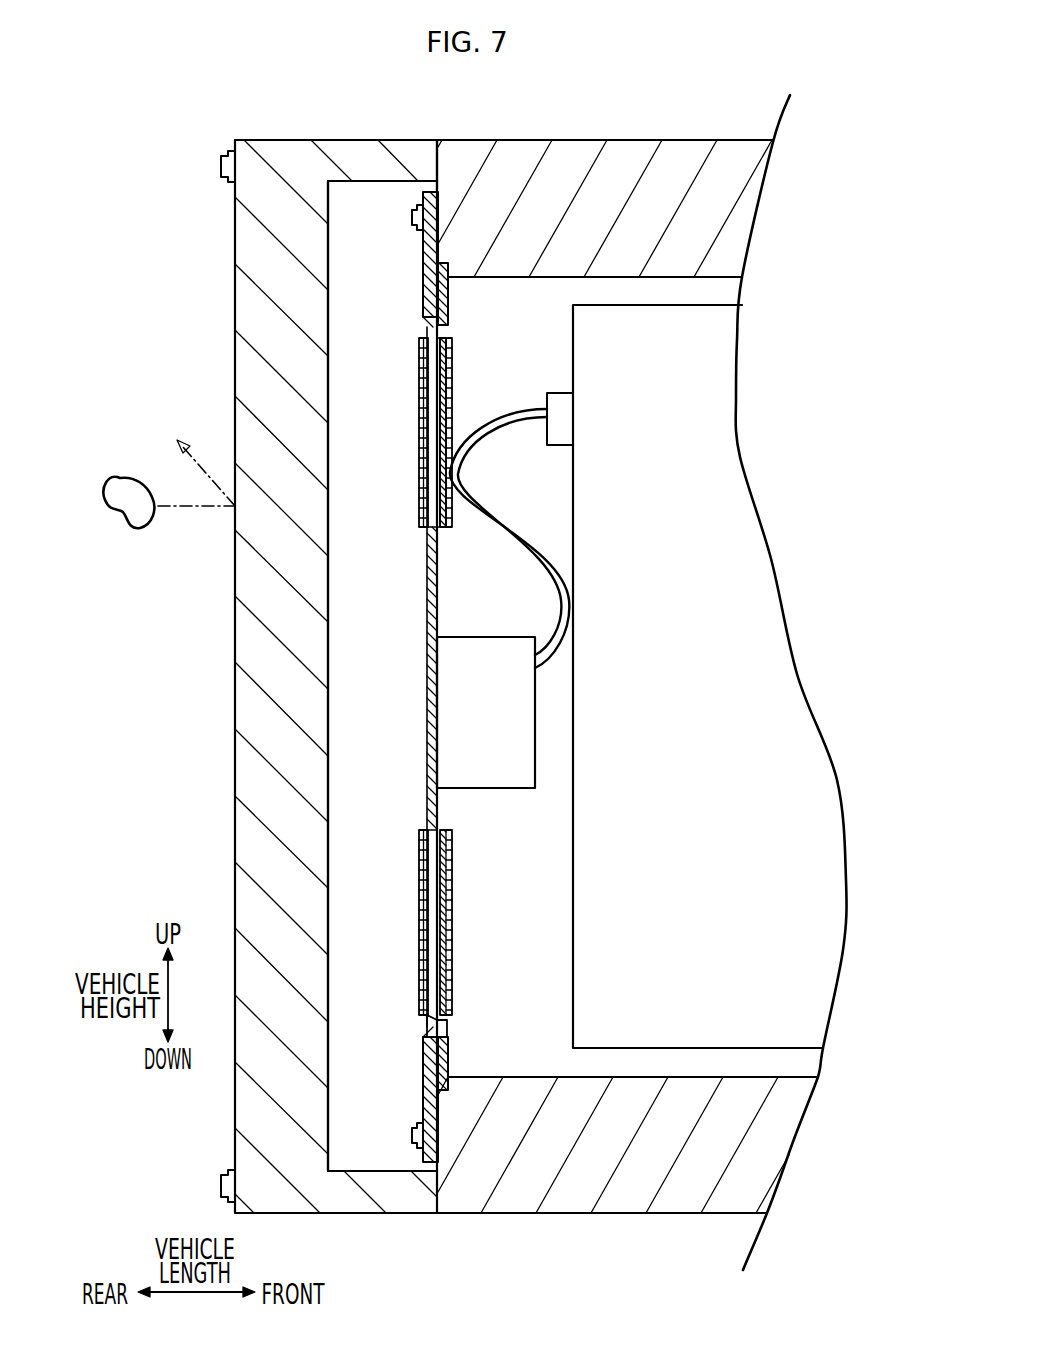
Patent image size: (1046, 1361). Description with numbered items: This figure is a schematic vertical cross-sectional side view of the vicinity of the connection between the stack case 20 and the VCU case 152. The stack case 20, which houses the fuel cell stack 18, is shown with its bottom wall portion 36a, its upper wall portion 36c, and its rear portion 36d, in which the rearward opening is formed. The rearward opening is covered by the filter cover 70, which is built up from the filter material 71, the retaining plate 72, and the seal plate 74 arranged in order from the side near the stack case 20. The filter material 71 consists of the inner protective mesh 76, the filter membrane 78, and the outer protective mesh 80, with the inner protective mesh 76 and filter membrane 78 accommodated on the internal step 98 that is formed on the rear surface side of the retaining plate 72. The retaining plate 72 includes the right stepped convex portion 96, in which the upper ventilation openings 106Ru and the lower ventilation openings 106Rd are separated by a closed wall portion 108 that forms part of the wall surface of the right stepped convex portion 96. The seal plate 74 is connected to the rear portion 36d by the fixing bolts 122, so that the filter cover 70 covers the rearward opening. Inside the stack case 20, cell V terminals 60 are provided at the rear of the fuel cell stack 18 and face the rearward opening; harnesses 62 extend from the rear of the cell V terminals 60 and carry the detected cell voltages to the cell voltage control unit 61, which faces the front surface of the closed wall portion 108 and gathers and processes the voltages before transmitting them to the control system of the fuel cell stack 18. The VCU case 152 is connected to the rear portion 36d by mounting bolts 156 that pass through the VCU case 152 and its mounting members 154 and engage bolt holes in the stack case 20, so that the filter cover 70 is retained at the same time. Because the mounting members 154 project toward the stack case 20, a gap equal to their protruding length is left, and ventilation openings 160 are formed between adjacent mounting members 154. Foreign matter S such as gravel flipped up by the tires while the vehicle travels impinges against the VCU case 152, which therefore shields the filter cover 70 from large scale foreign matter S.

The mounting member 154 is at (365, 160).
The VCU case 152 is at (250, 698).
The ventilation opening 160 is at (355, 760).
The rear portion 36d is at (437, 166).
The upper wall portion 36c is at (625, 157).
The bottom wall portion 36a is at (625, 1197).
The stack case 20 is at (540, 1214).
The fuel cell stack 18 is at (702, 405).
The mounting bolt 156 is at (221, 166).
The fixing bolt 122 is at (412, 217).
The filter cover 70 is at (440, 199).
The right stepped convex portion 96 is at (390, 677).
The closed wall portion 108 is at (430, 699).
The seal plate 74 is at (440, 296).
The retaining plate 72 is at (445, 1058).
The internal step 98 is at (440, 1024).
The ventilation openings 106Ru is at (448, 412).
The ventilation openings 106Rd is at (438, 872).
The filter material 71 is at (497, 412).
The inner protective mesh 76 is at (450, 342).
The filter membrane 78 is at (443, 359).
The outer protective mesh 80 is at (473, 432).
The cell V terminal 60 is at (574, 416).
The harness 62 is at (549, 548).
The cell voltage control unit 61 is at (520, 713).
The foreign matter S is at (126, 490).